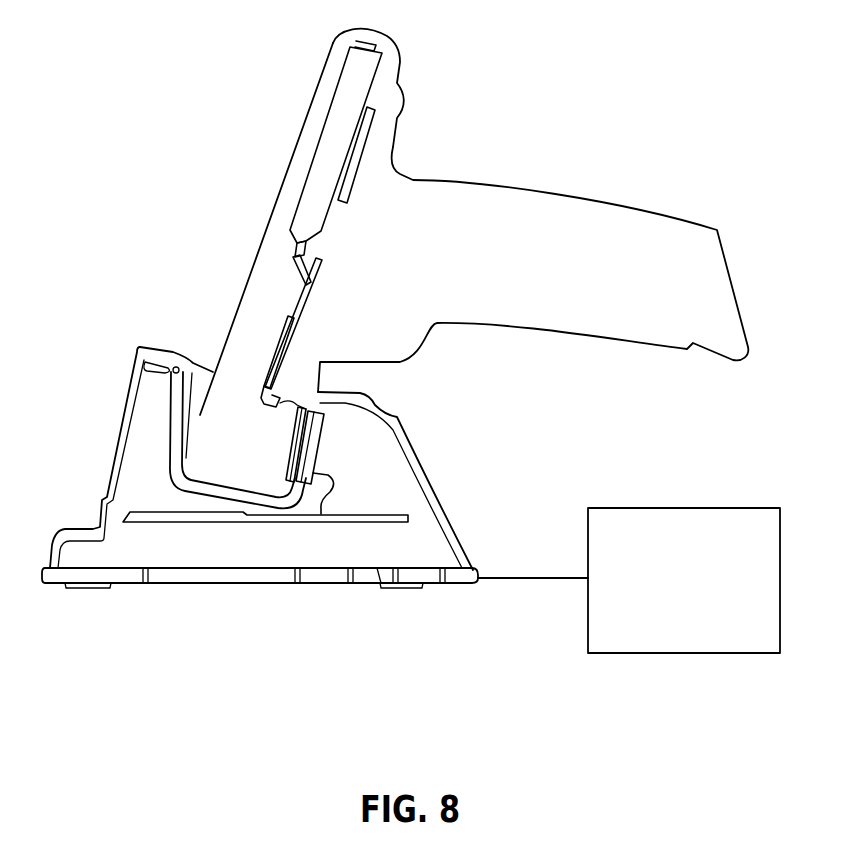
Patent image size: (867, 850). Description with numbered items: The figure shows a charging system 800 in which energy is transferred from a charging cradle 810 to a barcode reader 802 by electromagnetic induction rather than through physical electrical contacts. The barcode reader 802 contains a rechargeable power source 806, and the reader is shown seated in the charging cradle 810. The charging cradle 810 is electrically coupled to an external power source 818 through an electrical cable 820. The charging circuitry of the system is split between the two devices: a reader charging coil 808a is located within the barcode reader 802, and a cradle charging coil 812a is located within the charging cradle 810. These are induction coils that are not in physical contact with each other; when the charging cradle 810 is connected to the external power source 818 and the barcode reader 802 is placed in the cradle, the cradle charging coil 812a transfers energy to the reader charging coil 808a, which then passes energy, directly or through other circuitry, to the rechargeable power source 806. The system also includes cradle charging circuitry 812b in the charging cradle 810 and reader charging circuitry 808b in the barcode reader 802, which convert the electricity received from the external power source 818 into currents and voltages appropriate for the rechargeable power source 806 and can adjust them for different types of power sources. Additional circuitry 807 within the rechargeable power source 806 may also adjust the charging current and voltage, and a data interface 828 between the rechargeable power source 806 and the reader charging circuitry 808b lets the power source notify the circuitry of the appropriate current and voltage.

The charging system 800 is at (540, 58).
The barcode reader 802 is at (280, 191).
The rechargeable power source 806 is at (310, 212).
The circuitry 807 is at (354, 181).
The reader charging coil 808a is at (292, 442).
The reader charging circuitry 808b is at (300, 317).
The charging cradle 810 is at (443, 503).
The cradle charging coil 812a is at (325, 445).
The cradle charging circuitry 812b is at (377, 512).
The external power source 818 is at (684, 580).
The electrical cable 820 is at (538, 580).
The data interface 828 is at (300, 273).